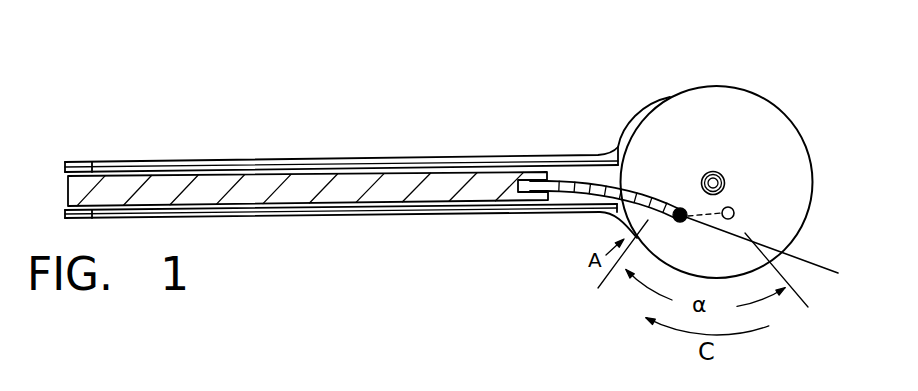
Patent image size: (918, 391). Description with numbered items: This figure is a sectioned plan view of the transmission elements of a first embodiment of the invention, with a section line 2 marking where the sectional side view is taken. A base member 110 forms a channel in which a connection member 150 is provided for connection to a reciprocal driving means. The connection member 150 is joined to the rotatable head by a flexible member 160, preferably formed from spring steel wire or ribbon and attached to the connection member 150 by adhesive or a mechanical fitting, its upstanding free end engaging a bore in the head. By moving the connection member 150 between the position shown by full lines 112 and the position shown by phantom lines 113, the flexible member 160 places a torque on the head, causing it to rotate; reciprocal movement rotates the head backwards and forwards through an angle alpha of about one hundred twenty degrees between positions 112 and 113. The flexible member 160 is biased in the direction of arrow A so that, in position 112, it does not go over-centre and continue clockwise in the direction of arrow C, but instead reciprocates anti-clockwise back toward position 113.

The base member 110 is at (348, 161).
The connection member 150 is at (197, 178).
The flexible member 160 is at (605, 193).
The full-line position 112 is at (679, 210).
The phantom-line position 113 is at (728, 207).
The section line 2- 2 is at (367, 188).